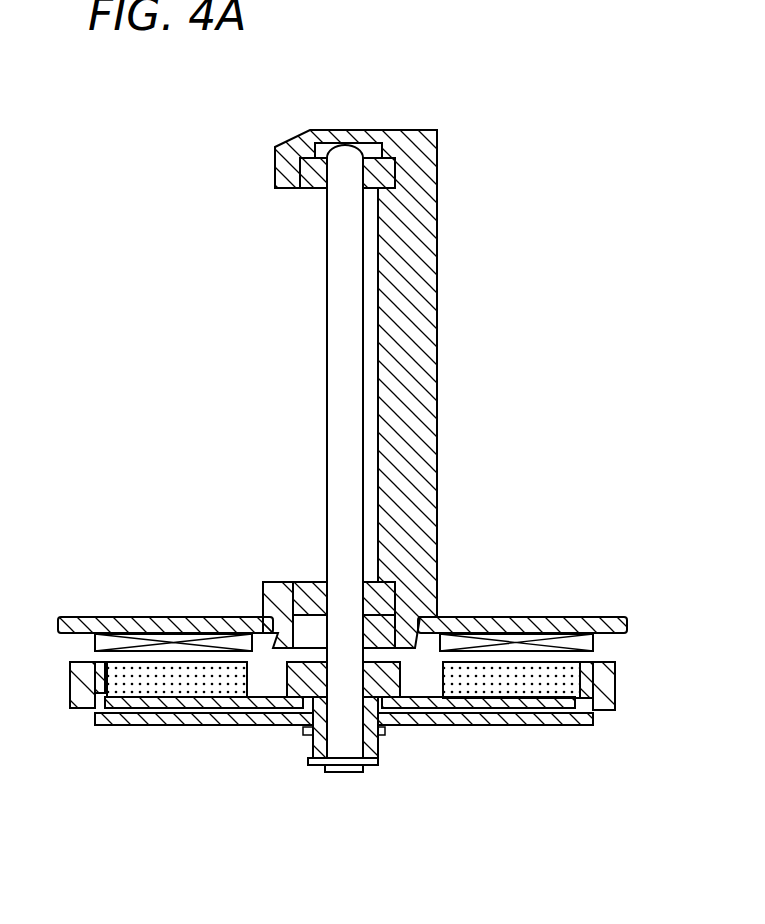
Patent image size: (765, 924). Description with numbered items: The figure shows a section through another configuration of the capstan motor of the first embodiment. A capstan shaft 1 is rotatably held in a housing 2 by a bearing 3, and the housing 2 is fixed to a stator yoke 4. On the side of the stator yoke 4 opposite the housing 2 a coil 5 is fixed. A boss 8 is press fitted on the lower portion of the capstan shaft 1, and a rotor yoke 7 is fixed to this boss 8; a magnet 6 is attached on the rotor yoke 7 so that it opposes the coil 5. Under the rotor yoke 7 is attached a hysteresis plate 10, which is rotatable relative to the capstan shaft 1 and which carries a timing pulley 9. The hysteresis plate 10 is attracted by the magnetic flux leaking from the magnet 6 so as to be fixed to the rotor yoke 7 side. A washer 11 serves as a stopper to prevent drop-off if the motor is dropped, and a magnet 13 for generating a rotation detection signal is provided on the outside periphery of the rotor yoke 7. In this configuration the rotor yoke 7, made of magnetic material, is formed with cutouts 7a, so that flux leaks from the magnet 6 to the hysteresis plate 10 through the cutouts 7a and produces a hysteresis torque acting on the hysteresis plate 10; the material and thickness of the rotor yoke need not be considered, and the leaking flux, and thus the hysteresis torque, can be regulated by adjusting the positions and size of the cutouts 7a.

The capstan shaft 1 is at (338, 325).
The housing 2 is at (430, 307).
The bearing 3 is at (310, 190).
The stator yoke 4 is at (482, 618).
The coil 5 is at (530, 642).
The magnet 6 is at (130, 700).
The rotor yoke 7 is at (220, 703).
The cutouts 7a is at (140, 703).
The boss 8 is at (287, 668).
The timing pulley 9 is at (378, 738).
The hysteresis plate 10 is at (490, 718).
The washer 11 is at (360, 772).
The magnet for generation of a rotation detection signal 13 is at (602, 710).